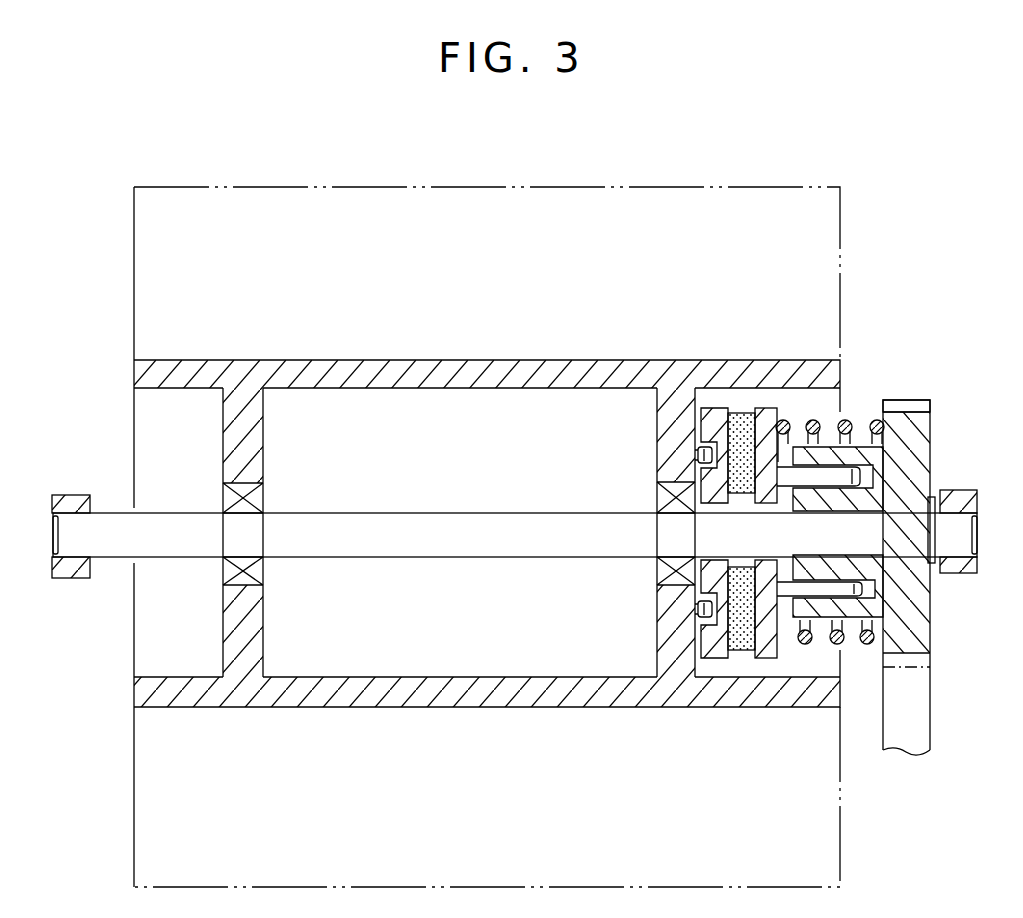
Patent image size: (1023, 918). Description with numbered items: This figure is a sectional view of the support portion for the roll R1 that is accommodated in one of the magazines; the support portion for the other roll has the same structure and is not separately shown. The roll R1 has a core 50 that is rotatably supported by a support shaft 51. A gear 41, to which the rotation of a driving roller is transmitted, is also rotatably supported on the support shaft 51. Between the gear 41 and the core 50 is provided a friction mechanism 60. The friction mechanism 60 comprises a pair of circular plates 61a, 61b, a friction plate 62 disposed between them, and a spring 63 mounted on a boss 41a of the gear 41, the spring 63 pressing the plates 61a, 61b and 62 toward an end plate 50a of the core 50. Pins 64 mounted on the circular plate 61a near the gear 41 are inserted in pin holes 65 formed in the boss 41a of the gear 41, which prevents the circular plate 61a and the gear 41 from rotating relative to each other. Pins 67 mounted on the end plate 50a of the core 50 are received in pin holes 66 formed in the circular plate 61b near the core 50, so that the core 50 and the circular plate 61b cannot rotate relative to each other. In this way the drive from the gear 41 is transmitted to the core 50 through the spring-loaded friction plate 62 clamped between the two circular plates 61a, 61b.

The roll R1 is at (268, 186).
The core 50 is at (487, 497).
The end plate 50a is at (665, 450).
The support shaft 51 is at (462, 545).
The friction mechanism 60 is at (744, 549).
The circular plate 61a is at (765, 645).
The circular plate 61b is at (712, 655).
The friction plate 62 is at (748, 650).
The spring 63 is at (843, 413).
The pins 64 is at (862, 602).
The pin holes 65 is at (866, 590).
The pin holes 66 is at (703, 607).
The pins 67 is at (703, 617).
The gear 41 is at (942, 540).
The boss 41a is at (862, 443).